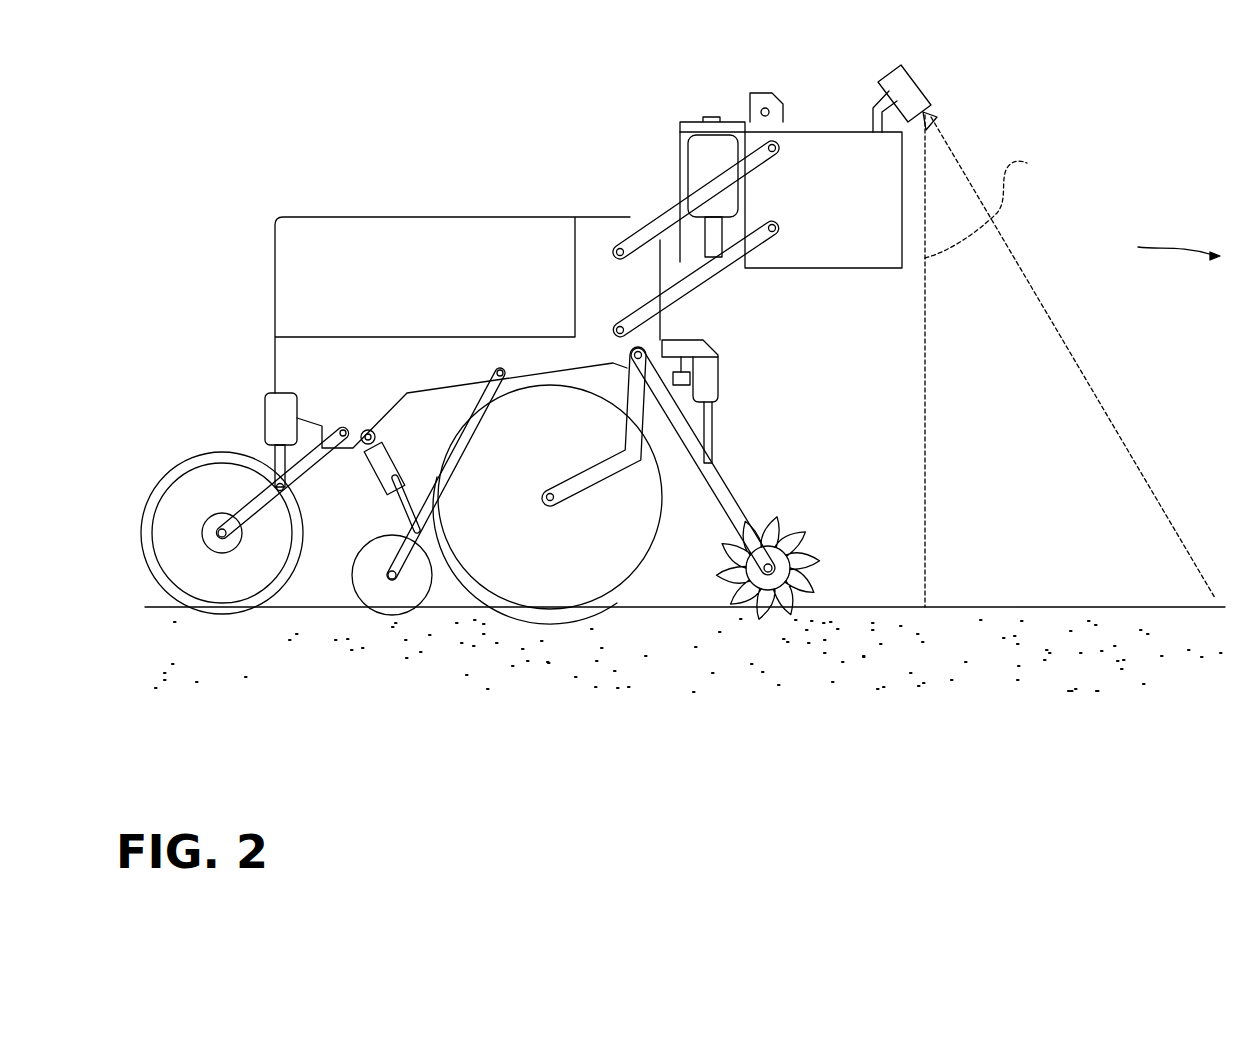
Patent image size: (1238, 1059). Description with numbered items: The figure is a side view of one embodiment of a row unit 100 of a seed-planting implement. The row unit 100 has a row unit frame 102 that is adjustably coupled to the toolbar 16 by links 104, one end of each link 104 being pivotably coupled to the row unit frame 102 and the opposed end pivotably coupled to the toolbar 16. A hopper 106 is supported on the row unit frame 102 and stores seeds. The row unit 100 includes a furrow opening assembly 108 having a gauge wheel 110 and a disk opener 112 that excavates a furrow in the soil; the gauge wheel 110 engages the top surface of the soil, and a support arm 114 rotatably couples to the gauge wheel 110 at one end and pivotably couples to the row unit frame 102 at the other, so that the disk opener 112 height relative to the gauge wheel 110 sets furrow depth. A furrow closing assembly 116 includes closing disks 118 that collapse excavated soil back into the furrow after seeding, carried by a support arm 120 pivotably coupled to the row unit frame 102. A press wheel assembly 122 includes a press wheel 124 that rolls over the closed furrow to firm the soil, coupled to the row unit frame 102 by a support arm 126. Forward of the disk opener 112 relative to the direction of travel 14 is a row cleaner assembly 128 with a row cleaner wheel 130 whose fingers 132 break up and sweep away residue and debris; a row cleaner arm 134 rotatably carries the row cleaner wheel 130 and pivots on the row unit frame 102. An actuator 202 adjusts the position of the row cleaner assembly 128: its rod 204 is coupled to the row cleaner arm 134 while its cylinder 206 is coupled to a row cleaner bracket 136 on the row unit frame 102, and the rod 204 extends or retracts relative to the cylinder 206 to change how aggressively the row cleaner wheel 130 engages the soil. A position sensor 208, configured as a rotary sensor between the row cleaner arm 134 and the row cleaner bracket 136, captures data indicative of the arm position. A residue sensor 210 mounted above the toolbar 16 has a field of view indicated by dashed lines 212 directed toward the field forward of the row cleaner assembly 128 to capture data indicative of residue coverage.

The row unit 100 is at (338, 114).
The row unit frame 102 is at (630, 216).
The links 104 is at (758, 174).
The hopper 106 is at (405, 217).
The furrow opening assembly 108 is at (576, 532).
The gauge wheel 110 is at (667, 473).
The disk opener 112 is at (498, 613).
The support arm 114 is at (583, 493).
The furrow closing assembly 116 is at (375, 612).
The closing disks 118 is at (353, 573).
The support arm 120 is at (508, 378).
The press wheel assembly 122 is at (225, 491).
The press wheel 124 is at (145, 535).
The support arm 126 is at (242, 500).
The row cleaner assembly 128 is at (812, 556).
The row cleaner wheel 130 is at (800, 550).
The fingers 132 is at (822, 560).
The row cleaner arm 134 is at (728, 493).
The row cleaner bracket 136 is at (690, 340).
The direction of travel 14 is at (1175, 236).
The toolbar 16 is at (815, 269).
The actuator 202 is at (761, 397).
The rod 204 is at (712, 440).
The cylinder 206 is at (720, 389).
The position sensor 208 is at (690, 377).
The residue sensor 210 is at (918, 80).
The dashed lines 212 is at (1024, 164).